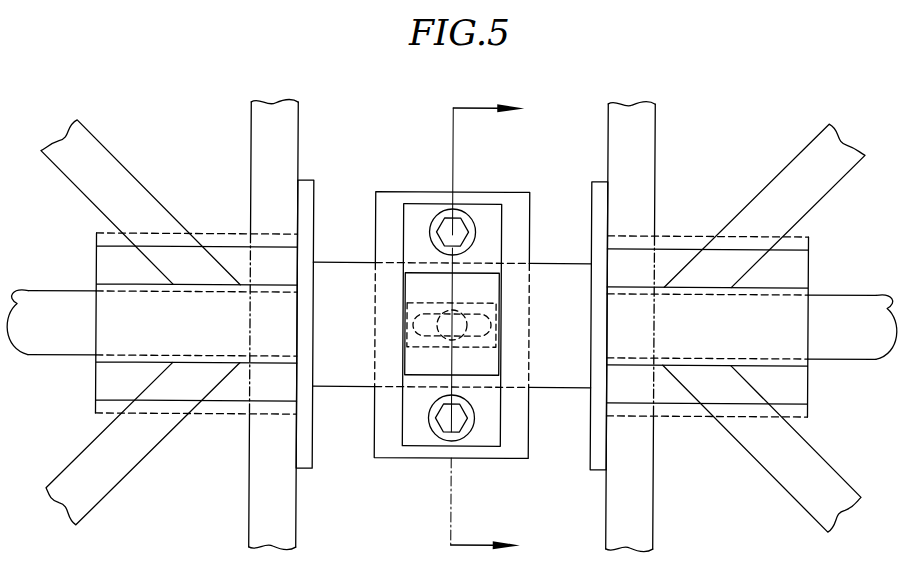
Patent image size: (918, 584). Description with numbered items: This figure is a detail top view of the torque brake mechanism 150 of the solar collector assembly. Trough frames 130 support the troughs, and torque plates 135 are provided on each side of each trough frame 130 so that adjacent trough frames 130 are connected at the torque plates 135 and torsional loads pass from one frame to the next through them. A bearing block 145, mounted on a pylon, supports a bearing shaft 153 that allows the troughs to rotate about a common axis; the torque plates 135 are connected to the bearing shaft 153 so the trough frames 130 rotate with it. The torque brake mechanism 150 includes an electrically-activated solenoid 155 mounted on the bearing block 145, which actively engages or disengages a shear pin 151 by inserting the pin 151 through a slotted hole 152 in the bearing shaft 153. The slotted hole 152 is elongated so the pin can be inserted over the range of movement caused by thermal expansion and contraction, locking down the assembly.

The trough frame 130 is at (250, 510).
The torque plate 135 is at (306, 468).
The bearing block 145 is at (394, 191).
The torque brake mechanism 150 is at (439, 290).
The shear pin 151 is at (458, 322).
The slotted hole 152 is at (480, 318).
The bearing shaft 153 is at (343, 389).
The solenoid 155 is at (413, 287).